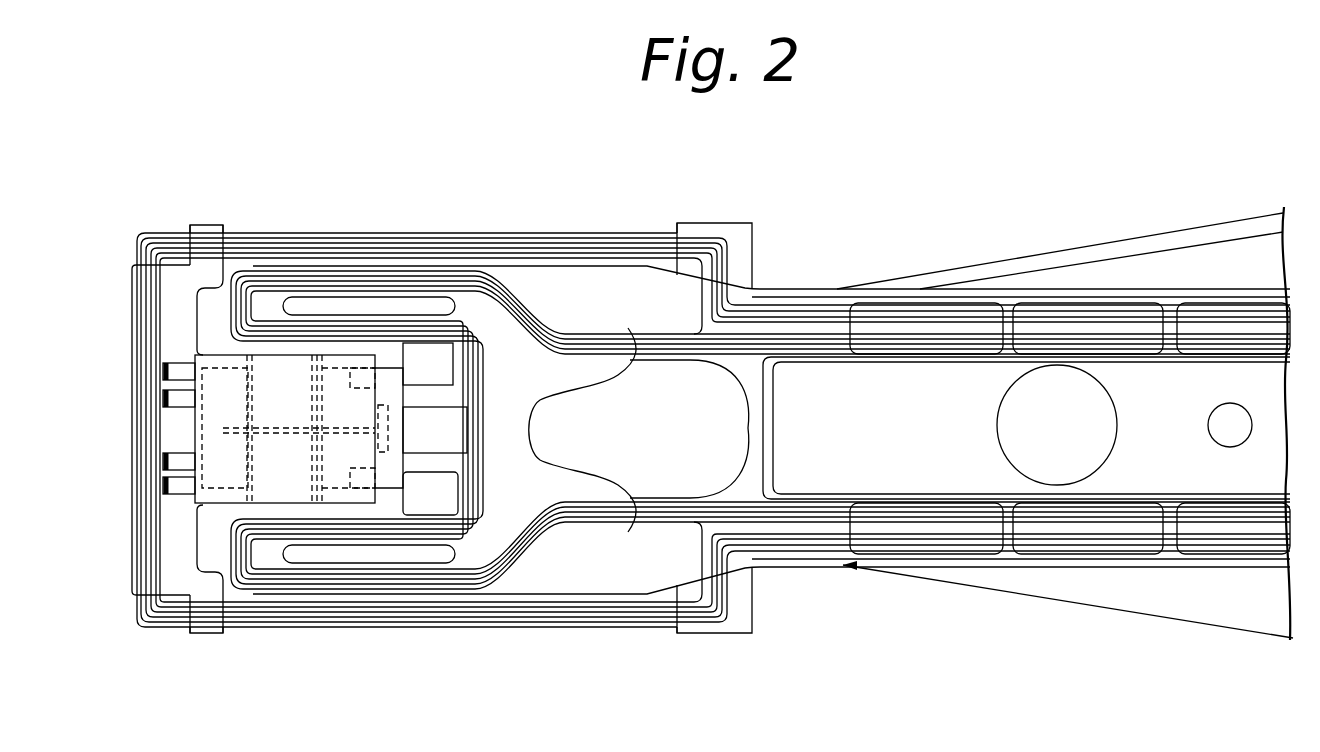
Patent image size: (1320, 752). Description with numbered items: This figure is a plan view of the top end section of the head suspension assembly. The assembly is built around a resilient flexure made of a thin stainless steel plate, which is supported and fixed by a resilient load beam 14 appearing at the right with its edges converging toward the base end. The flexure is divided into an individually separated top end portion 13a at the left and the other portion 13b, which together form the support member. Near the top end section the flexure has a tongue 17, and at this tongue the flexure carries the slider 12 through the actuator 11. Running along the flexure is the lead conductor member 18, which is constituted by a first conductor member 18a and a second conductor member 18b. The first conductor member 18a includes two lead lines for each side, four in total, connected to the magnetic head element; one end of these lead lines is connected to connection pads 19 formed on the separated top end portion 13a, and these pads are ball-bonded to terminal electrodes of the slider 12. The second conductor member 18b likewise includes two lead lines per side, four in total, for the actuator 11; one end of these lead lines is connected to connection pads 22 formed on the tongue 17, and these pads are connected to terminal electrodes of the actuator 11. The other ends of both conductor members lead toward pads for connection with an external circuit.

The actuator 11 is at (387, 467).
The slider 12 is at (362, 497).
The top end portion of the flexure 13a is at (198, 273).
The other portion of the flexure 13b is at (583, 572).
The load beam 14 is at (1243, 255).
The tongue 17 is at (444, 396).
The lead conductor member 18 is at (783, 520).
The first conductor member 18a is at (572, 231).
The second conductor member 18b is at (566, 328).
The connection pads 19 is at (172, 400).
The connection pads 22 is at (380, 348).